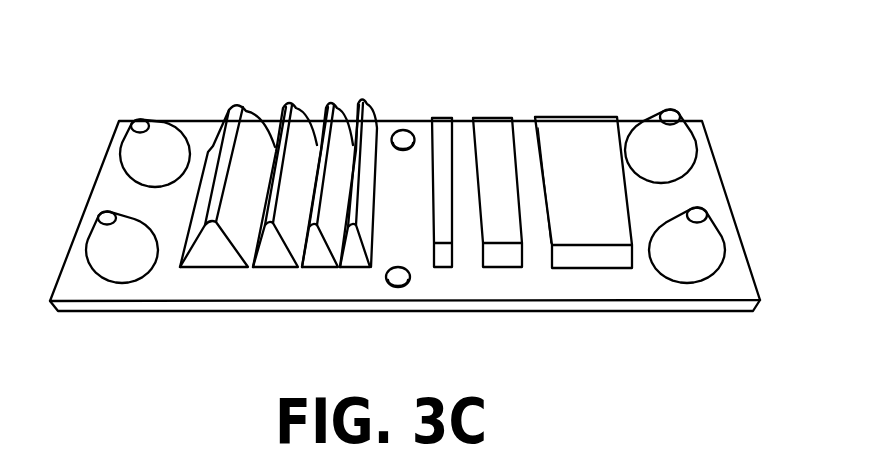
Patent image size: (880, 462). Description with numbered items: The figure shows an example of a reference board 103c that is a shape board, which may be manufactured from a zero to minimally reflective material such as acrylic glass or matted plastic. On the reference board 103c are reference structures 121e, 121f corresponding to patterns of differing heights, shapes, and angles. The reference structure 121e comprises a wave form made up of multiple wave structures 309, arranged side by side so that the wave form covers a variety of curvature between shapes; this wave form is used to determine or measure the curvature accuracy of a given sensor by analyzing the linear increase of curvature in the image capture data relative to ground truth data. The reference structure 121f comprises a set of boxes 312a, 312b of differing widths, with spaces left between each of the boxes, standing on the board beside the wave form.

The reference board 103c is at (419, 213).
The reference structure 121e is at (264, 188).
The reference structure 121f is at (557, 196).
The wave structure 309 is at (218, 253).
The box 312a is at (492, 260).
The box 312b is at (592, 260).